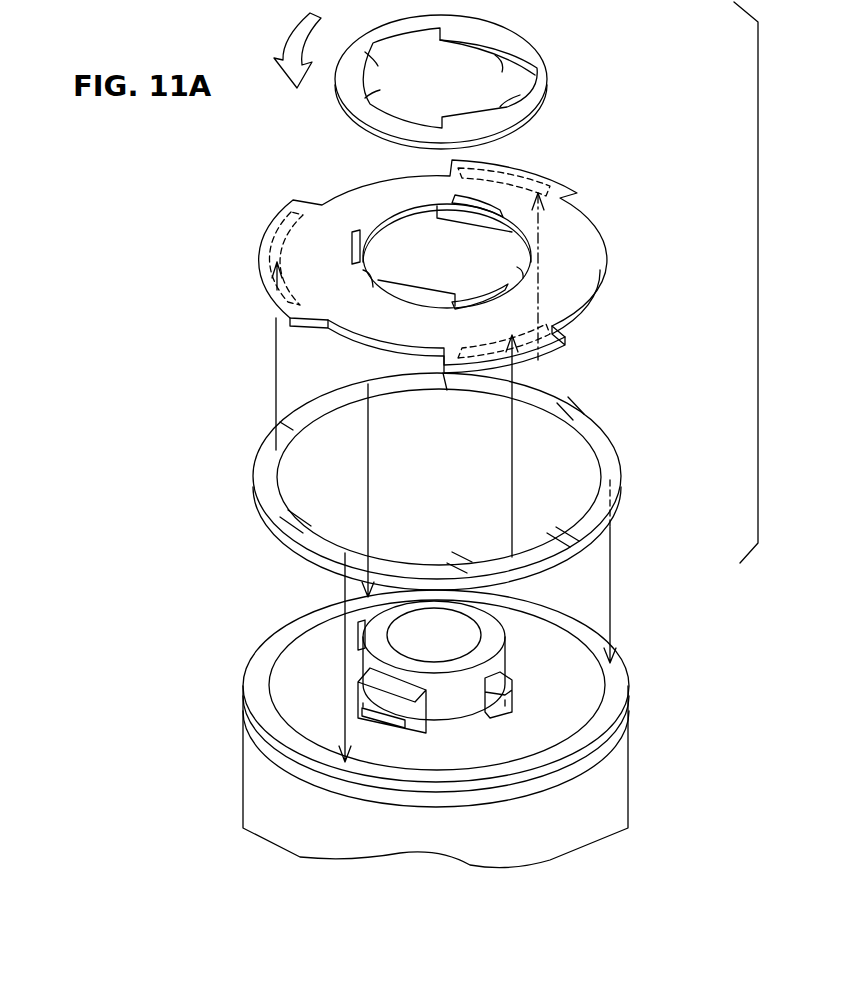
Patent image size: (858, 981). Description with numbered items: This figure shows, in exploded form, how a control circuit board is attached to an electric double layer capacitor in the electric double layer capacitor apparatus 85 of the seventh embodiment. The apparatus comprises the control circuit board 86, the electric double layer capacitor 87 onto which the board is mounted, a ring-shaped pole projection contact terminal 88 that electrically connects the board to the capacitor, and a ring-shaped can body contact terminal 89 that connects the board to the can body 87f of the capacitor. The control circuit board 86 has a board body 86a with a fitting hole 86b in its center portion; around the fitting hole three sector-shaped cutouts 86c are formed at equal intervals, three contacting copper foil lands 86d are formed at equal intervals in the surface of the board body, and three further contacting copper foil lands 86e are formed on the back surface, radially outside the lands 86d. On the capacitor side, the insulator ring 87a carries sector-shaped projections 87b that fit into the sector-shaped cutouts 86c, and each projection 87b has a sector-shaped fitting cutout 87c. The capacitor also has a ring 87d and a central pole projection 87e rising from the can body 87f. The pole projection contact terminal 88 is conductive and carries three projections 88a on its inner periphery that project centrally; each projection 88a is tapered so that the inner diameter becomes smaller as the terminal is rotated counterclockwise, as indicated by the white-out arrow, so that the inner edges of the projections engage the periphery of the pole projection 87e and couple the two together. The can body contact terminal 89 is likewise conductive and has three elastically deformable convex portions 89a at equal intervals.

The electric double layer capacitor apparatus 85 is at (758, 270).
The control circuit board 86 is at (620, 177).
The board body 86a is at (614, 256).
The fitting hole 86b is at (540, 226).
The sector-shaped cutouts 86c is at (522, 272).
The contacting copper foil lands 86d is at (455, 195).
The contacting copper foil lands 86e is at (287, 236).
The electric double layer capacitor 87 is at (650, 622).
The insulator ring 87a is at (545, 715).
The sector-shaped projections 87b is at (360, 625).
The sector-shaped fitting cutouts 87c is at (365, 700).
The ring 87d is at (626, 688).
The pole projection 87e is at (464, 722).
The can body 87f is at (646, 808).
The ring-shaped pole projection contact terminal 88 is at (617, 37).
The projections 88a is at (525, 72).
The ring-shaped can body contact terminal 89 is at (634, 424).
The convex portions 89a is at (270, 483).